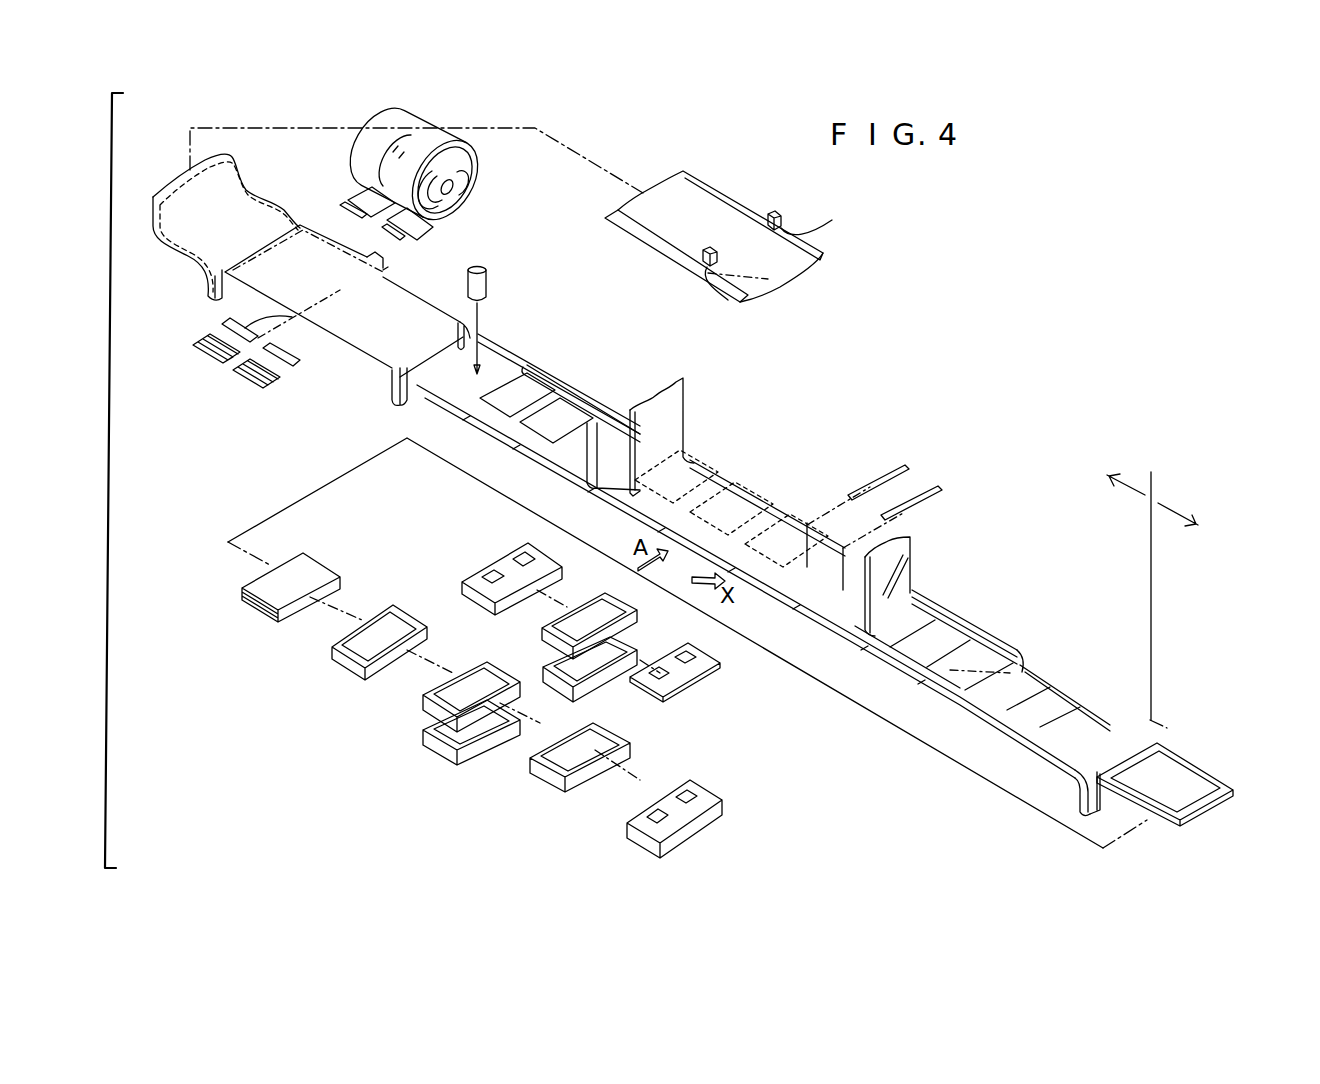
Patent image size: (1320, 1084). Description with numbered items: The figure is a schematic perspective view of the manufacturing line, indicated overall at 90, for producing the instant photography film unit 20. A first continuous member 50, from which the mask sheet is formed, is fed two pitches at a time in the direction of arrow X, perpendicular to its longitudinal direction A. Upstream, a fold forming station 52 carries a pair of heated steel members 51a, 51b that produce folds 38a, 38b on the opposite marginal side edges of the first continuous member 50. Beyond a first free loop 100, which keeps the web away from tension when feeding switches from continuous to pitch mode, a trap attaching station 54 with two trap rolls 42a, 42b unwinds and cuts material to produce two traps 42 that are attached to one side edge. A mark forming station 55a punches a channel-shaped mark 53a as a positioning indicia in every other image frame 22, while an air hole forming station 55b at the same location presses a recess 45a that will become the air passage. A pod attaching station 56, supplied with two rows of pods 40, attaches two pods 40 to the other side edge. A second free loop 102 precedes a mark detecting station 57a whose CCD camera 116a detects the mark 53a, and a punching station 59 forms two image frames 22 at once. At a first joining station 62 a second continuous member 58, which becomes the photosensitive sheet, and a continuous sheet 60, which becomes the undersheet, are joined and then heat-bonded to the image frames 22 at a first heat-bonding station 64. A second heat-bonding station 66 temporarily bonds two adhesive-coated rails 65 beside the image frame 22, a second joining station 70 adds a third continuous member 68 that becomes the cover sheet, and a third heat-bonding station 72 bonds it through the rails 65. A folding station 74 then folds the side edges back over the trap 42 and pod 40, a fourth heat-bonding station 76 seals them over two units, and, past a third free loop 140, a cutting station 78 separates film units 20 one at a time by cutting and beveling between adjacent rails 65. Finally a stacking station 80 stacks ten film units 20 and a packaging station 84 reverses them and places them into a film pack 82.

The instant photography film unit 20 is at (307, 572).
The image frame 22 is at (520, 405).
The fold 38a is at (655, 228).
The fold 38b is at (712, 185).
The pod 40 is at (335, 282).
The trap 42 is at (409, 196).
The trap roll 42a is at (470, 175).
The trap roll 42b is at (356, 160).
The recess 45a is at (380, 255).
The first continuous member 50 is at (790, 262).
The heated steel member 51a is at (728, 300).
The heated steel member 51b is at (829, 221).
The fold forming station 52 is at (801, 193).
The guide portion 53a is at (379, 342).
The trap attaching station 54 is at (333, 202).
The mark forming station 55a is at (389, 297).
The air hole forming station 55b is at (387, 263).
The pod attaching station 56 is at (324, 362).
The mark detecting station 57a is at (518, 330).
The second continuous member 58 is at (676, 388).
The punching station 59 is at (572, 365).
The continuous sheet 60 is at (572, 458).
The first joining station 62 is at (703, 431).
The first heat-bonding station 64 is at (757, 465).
The rails 65 is at (905, 465).
The second heat-bonding station 66 is at (814, 510).
The third continuous member 68 is at (915, 553).
The second joining station 70 is at (948, 583).
The third heat-bonding station 72 is at (993, 612).
The folding station 74 is at (1042, 655).
The fourth heat-bonding station 76 is at (1116, 697).
The cutting station 78 is at (1183, 735).
The stacking station 80 is at (265, 638).
The film pack 82 is at (505, 549).
The packaging station 84 is at (505, 764).
The feeding apparatus 90 is at (1040, 322).
The first free loop 100 is at (215, 296).
The second free loop 102 is at (395, 402).
The CCD camera 116a is at (488, 290).
The third free loop 140 is at (1088, 798).